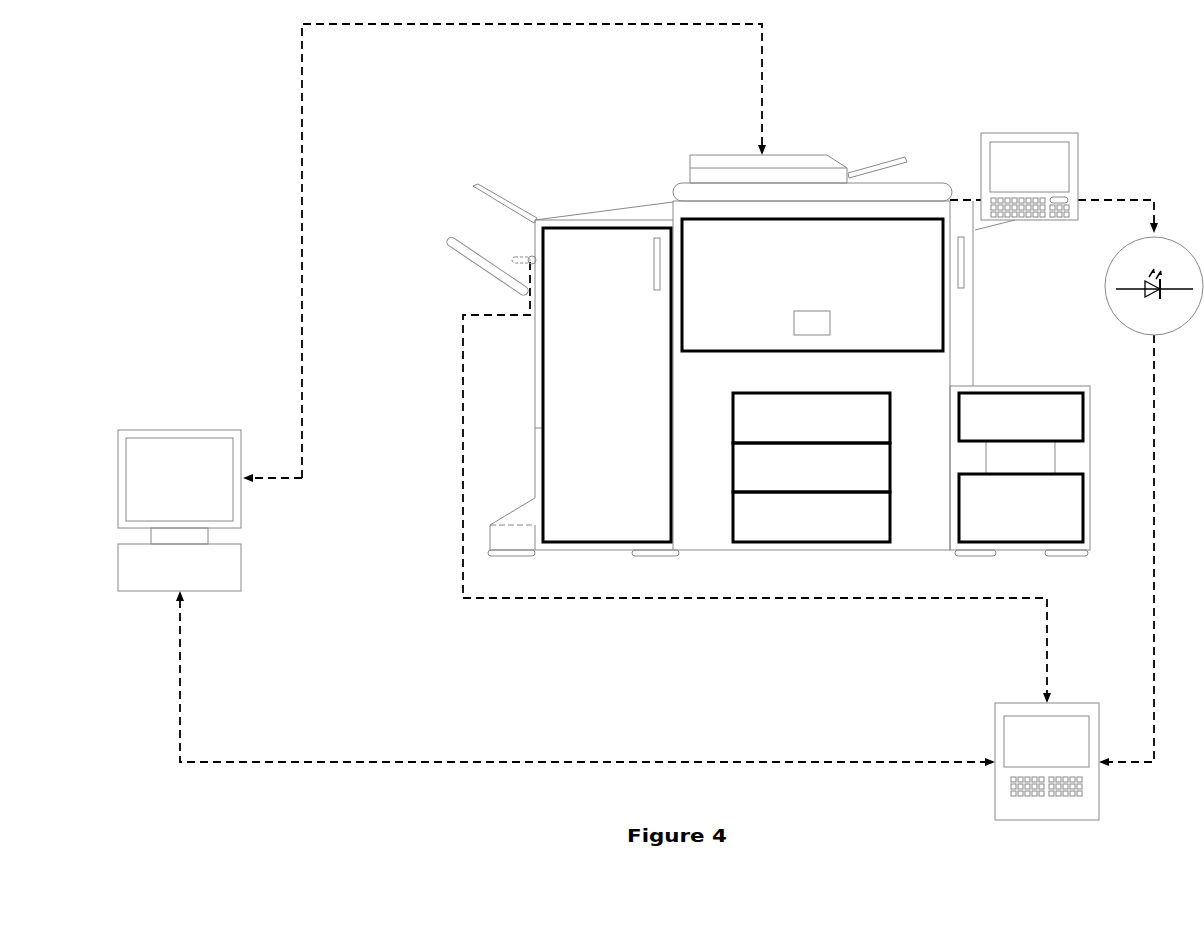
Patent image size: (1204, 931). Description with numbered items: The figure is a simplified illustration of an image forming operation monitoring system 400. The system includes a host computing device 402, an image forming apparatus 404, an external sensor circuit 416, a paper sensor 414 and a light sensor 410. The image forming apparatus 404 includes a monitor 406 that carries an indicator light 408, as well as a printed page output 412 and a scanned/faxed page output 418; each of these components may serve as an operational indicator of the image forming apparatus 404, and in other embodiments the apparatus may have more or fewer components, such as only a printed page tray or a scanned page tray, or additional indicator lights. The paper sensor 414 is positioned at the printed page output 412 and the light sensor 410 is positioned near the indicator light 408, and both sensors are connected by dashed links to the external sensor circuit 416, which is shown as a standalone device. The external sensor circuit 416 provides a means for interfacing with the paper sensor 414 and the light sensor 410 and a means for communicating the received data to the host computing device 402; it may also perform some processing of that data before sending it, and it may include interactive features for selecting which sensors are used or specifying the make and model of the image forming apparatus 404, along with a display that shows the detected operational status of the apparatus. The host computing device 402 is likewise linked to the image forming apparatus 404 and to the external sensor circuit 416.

The image forming operation monitoring system 400 is at (256, 62).
The host computing device 402 is at (221, 428).
The image forming apparatus 404 is at (715, 152).
The monitor 406 is at (1049, 130).
The indicator light 408 is at (1063, 200).
The light sensor 410 is at (1187, 241).
The printed page output 412 is at (477, 238).
The paper sensor 414 is at (537, 262).
The external sensor circuit 416 is at (1017, 701).
The scanned/faxed page output 418 is at (877, 165).